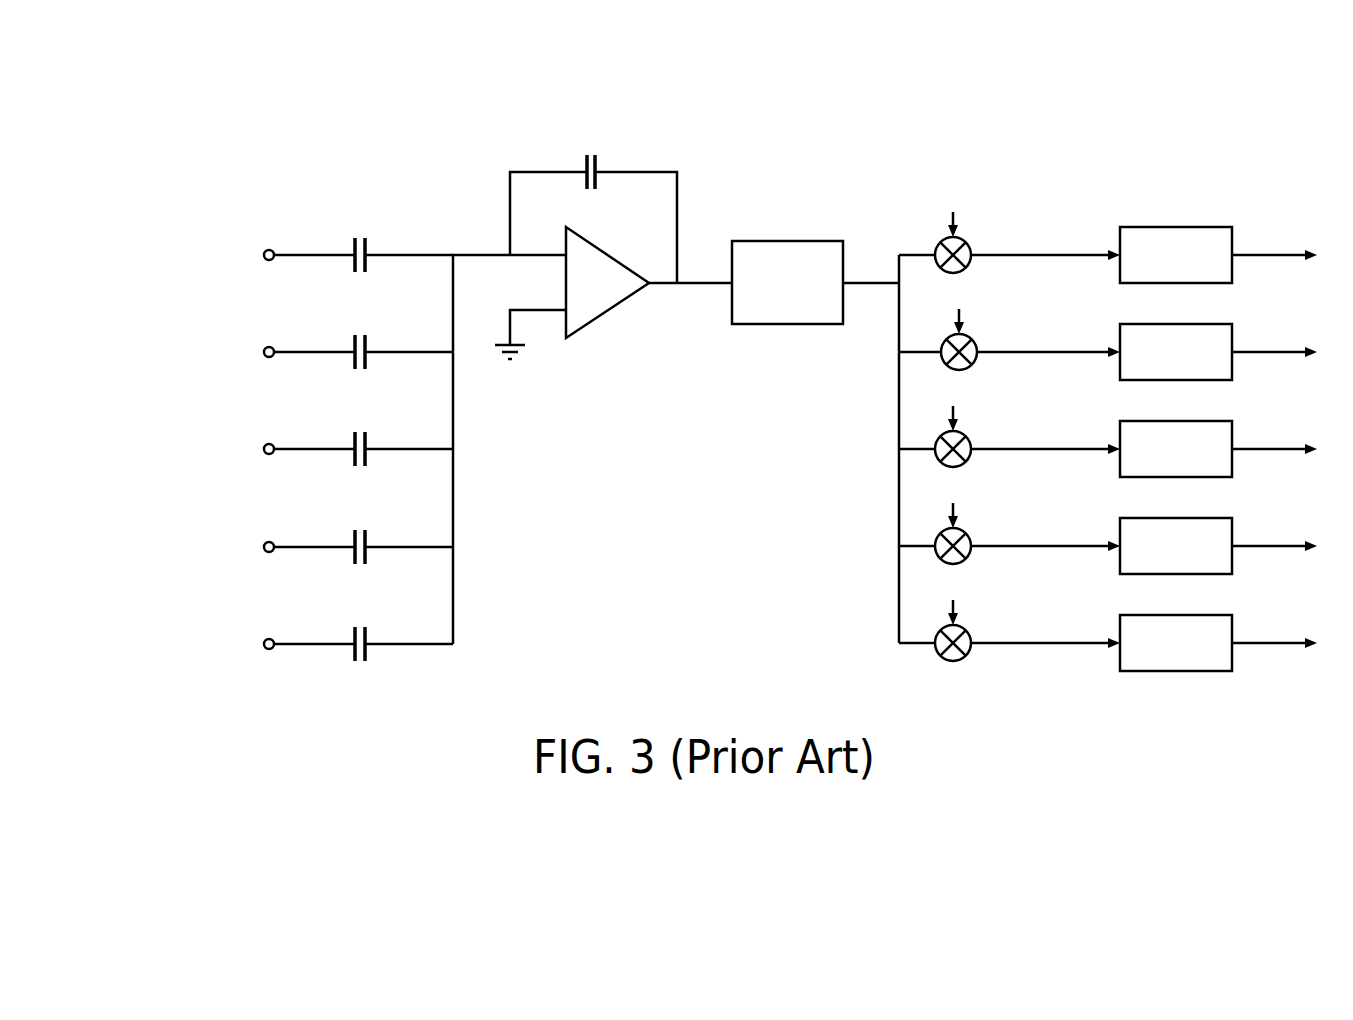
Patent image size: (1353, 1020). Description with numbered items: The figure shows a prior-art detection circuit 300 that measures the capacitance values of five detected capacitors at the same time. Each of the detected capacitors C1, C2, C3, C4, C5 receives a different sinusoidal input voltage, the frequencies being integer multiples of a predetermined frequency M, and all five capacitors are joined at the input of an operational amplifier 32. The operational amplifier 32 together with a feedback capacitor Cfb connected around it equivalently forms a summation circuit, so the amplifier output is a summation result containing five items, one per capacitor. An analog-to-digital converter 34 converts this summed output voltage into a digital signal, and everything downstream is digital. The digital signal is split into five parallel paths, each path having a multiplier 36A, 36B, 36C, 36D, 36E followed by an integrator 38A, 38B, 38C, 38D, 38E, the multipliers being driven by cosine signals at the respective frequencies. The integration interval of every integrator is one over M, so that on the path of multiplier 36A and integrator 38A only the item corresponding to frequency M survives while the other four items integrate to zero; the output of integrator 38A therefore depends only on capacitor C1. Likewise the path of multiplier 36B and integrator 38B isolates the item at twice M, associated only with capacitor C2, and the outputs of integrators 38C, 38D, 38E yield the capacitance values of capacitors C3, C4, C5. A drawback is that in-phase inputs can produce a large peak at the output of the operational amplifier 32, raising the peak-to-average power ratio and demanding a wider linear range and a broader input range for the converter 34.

The detection circuit 300 is at (168, 97).
The detected capacitor C1 is at (290, 237).
The detected capacitor C2 is at (285, 334).
The detected capacitor C3 is at (285, 431).
The detected capacitor C4 is at (285, 529).
The detected capacitor C5 is at (285, 626).
The feedback capacitor Cfb is at (593, 200).
The operational amplifier 32 is at (607, 313).
The analog-to-digital converter 34 is at (795, 241).
The multiplier 36A is at (966, 243).
The multiplier 36B is at (972, 340).
The multiplier 36C is at (966, 437).
The multiplier 36D is at (966, 534).
The multiplier 36E is at (966, 631).
The integrator 38A is at (1217, 227).
The integrator 38B is at (1217, 324).
The integrator 38C is at (1217, 421).
The integrator 38D is at (1217, 518).
The integrator 38E is at (1217, 615).